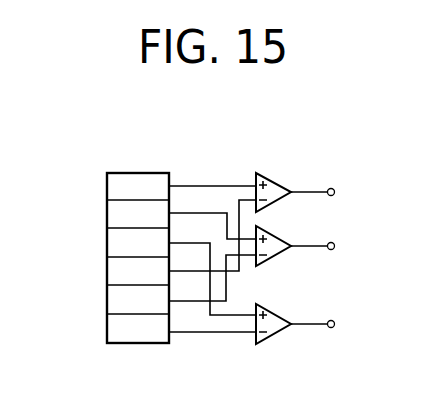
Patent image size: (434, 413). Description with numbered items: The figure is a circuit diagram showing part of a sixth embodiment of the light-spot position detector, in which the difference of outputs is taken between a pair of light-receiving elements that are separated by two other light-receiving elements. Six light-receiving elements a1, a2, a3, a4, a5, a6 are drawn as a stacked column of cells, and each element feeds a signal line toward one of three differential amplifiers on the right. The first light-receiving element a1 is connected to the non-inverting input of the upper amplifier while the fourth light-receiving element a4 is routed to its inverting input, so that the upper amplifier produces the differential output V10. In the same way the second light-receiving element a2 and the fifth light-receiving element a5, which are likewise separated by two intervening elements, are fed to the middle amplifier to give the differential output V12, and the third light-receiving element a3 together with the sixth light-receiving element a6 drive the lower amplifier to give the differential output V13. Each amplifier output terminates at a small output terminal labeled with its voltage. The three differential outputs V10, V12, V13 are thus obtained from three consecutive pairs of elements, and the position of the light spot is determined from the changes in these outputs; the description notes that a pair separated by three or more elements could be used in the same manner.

The light-receiving element a1 is at (107, 186).
The light-receiving element a2 is at (107, 214).
The light-receiving element a3 is at (107, 244).
The light-receiving element a4 is at (107, 272).
The light-receiving element a5 is at (107, 303).
The light-receiving element a6 is at (107, 333).
The differential output V10 is at (318, 192).
The differential output V12 is at (318, 246).
The differential output V13 is at (318, 324).